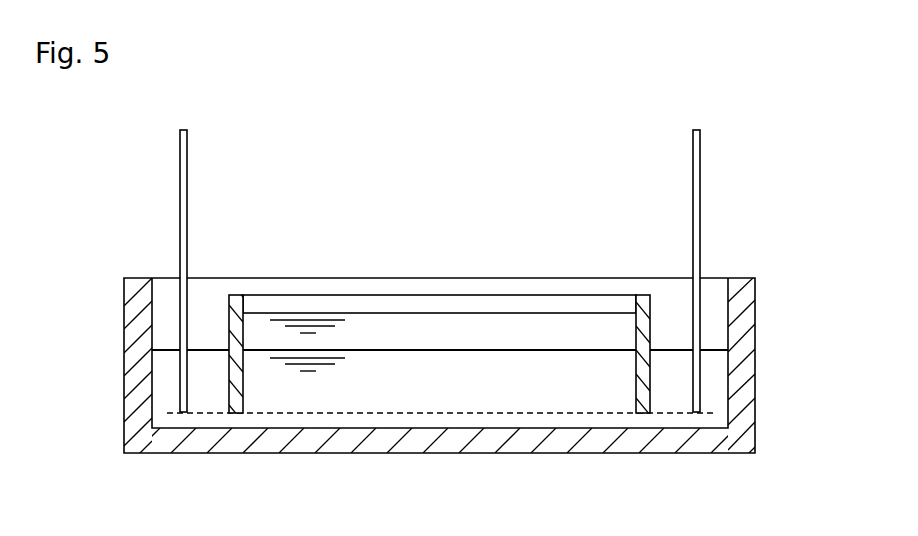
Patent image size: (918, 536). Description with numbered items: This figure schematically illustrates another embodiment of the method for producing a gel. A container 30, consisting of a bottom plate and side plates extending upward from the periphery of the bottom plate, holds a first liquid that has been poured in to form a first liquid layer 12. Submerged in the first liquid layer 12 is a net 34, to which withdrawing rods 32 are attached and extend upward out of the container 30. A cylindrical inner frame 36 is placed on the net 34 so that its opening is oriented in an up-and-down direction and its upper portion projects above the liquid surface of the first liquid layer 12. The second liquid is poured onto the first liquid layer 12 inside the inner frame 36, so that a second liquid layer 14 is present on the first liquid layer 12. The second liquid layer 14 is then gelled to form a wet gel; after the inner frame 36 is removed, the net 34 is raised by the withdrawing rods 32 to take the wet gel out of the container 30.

The first liquid layer 12 is at (717, 384).
The second liquid layer 14 is at (552, 322).
The container 30 is at (745, 297).
The withdrawing rods 32 is at (187, 163).
The net 34 is at (675, 412).
The inner frame 36 is at (235, 300).